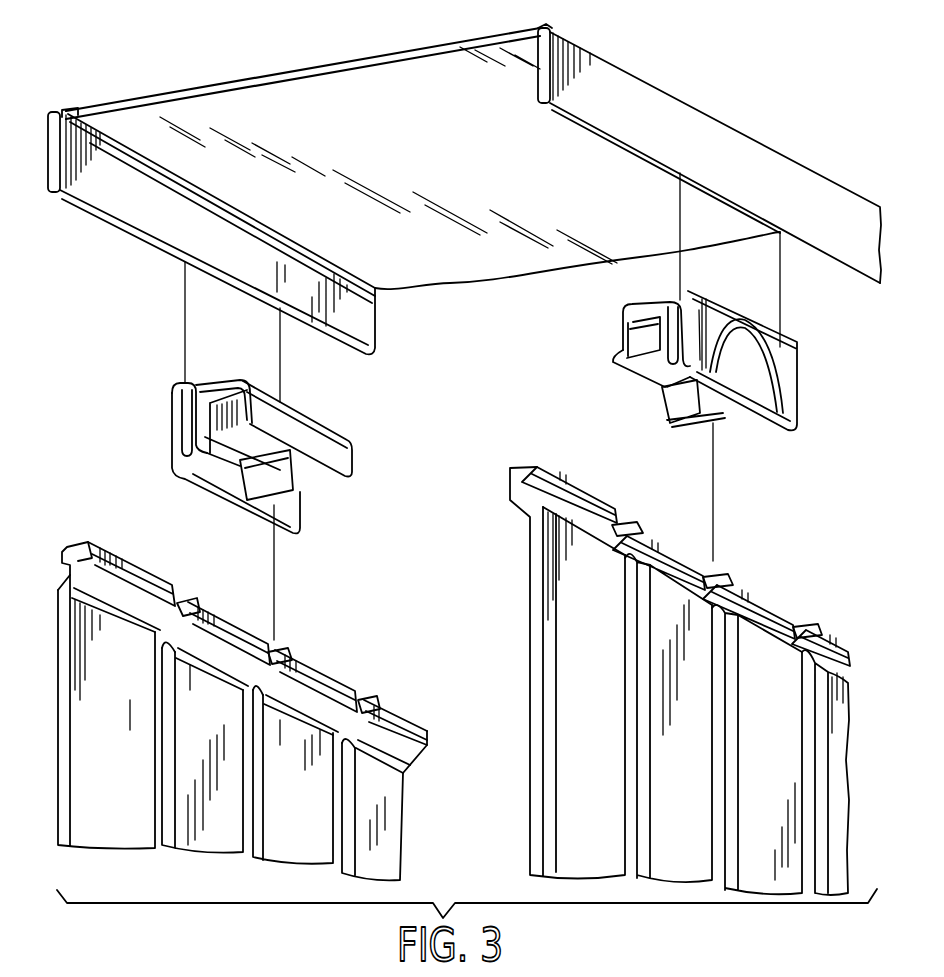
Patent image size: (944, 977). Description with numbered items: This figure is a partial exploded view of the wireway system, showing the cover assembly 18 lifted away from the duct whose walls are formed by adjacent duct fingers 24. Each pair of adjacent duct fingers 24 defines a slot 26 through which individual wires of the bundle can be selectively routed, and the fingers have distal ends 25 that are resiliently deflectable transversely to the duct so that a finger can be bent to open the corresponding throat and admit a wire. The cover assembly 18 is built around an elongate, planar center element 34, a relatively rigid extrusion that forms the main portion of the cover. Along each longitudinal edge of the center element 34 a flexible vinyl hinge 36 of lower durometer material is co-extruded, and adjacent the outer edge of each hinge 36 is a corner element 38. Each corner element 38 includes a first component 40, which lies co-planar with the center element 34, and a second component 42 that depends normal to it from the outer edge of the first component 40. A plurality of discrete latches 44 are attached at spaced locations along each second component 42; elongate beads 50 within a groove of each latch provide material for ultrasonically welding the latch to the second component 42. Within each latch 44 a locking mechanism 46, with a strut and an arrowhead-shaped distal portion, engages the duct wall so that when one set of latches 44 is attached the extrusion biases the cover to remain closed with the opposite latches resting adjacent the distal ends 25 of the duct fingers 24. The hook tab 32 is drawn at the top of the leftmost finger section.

The cover assembly 18 is at (296, 58).
The duct fingers 24 is at (108, 740).
The distal ends 25 is at (410, 708).
The slot 26 is at (807, 725).
The hook tab 32 is at (77, 547).
The center element 34 is at (413, 158).
The hinges 36 is at (77, 114).
The corner elements 38 is at (47, 104).
The first component 40 is at (63, 110).
The second component 42 is at (158, 190).
The latches 44 is at (160, 449).
The locking mechanism 46 is at (662, 434).
The elongate beads 50 is at (467, 933).